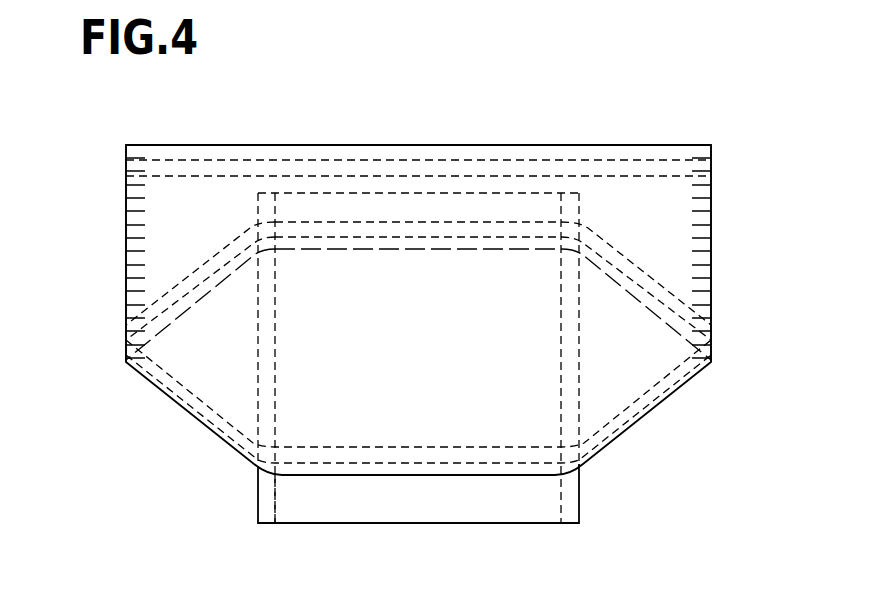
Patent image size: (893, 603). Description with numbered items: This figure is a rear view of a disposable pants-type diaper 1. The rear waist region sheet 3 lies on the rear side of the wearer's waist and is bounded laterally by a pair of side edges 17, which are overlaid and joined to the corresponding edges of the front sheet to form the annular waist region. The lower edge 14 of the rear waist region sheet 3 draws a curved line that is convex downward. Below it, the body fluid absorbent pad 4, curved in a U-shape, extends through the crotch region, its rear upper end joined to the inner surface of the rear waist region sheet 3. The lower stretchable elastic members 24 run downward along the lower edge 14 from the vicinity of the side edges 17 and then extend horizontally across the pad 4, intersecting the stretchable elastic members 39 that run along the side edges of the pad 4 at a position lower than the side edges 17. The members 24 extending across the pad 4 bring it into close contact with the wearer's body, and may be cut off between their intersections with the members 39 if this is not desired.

The disposable pants-type diaper 1 is at (592, 77).
The rear waist region sheet 3 is at (190, 190).
The body fluid absorbent pad 4 is at (495, 523).
The lower edge 14 is at (343, 475).
The side edges 17 is at (126, 244).
The lower stretchable elastic members 24 is at (190, 370).
The stretchable elastic members 39 is at (268, 498).